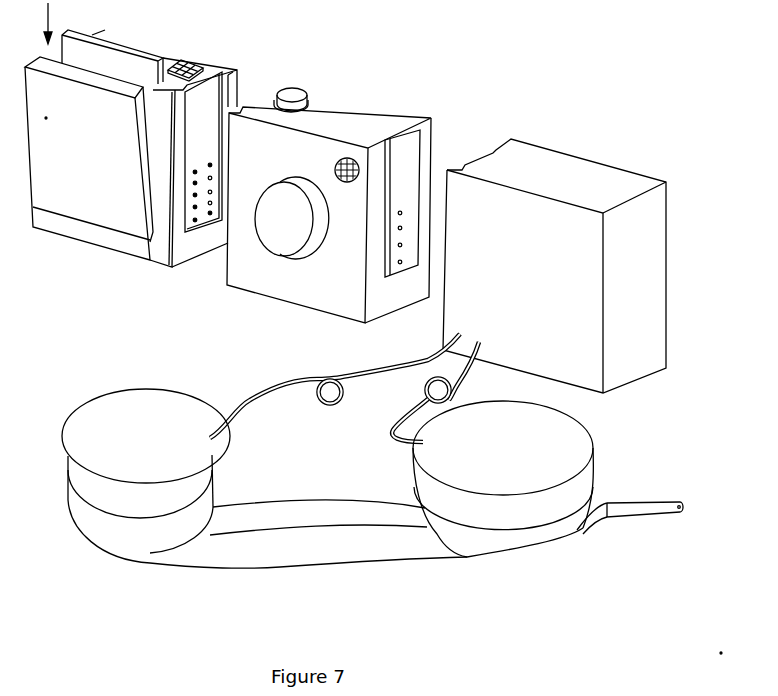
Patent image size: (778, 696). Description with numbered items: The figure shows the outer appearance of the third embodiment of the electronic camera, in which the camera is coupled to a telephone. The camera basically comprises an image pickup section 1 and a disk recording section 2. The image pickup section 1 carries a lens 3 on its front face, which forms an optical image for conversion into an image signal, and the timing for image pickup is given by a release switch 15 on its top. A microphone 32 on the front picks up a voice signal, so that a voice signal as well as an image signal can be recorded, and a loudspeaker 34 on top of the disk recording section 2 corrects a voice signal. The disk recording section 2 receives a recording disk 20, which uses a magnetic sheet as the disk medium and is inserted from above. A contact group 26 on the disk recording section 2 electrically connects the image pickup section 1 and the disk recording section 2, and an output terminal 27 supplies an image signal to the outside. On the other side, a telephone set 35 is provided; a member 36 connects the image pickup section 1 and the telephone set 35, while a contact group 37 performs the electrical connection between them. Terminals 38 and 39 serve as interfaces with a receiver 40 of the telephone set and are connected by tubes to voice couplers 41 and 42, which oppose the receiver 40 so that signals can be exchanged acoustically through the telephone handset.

The image pickup section 1 is at (365, 187).
The disk recording section 2 is at (141, 166).
The lens 3 is at (280, 242).
The release switch 15 is at (294, 92).
The recording disk 20 is at (127, 52).
The contact group 26 is at (198, 233).
The output terminal 27 is at (188, 223).
The microphone 32 is at (348, 158).
The loudspeaker 34 is at (186, 62).
The telephone set 35 is at (588, 173).
The member 36 is at (413, 132).
The contact group 37 is at (402, 211).
The terminal 38 is at (442, 338).
The terminal 39 is at (479, 348).
The receiver 40 is at (67, 507).
The voice coupler 41 is at (70, 428).
The voice coupler 42 is at (435, 453).